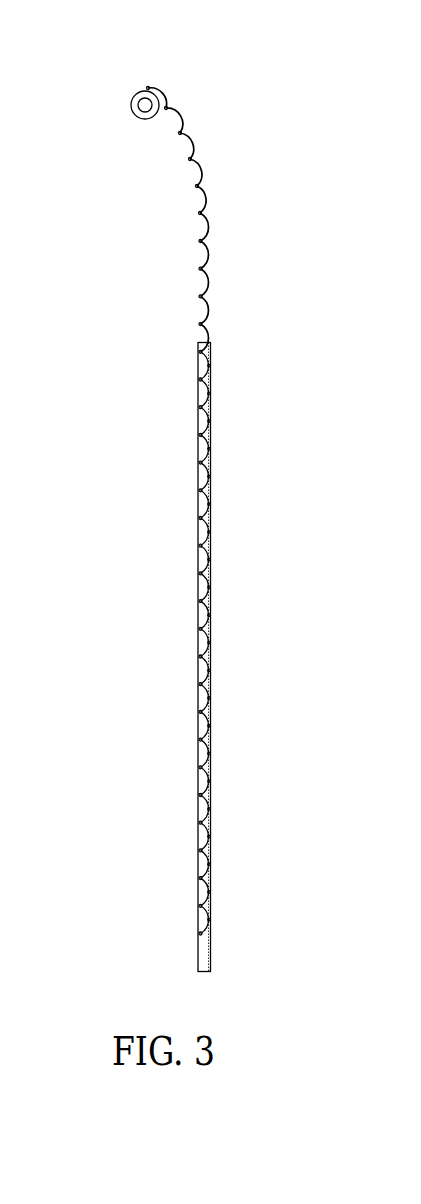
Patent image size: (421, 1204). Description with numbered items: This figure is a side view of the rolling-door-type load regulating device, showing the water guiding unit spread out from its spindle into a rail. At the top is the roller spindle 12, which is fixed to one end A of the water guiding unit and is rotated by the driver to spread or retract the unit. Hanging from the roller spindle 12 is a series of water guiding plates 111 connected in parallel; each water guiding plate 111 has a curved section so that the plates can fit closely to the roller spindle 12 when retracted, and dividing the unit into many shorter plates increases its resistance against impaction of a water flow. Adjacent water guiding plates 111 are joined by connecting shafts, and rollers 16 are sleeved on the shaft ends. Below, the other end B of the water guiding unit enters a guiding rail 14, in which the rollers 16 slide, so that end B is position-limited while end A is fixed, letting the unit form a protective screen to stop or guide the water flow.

The roller spindle 12 is at (137, 98).
The water guiding plate 111 is at (182, 118).
The roller 16 is at (180, 133).
The guiding rail 14 is at (198, 393).
The one end of the water guiding unit A is at (152, 82).
The other end of the water guiding unit B is at (207, 940).